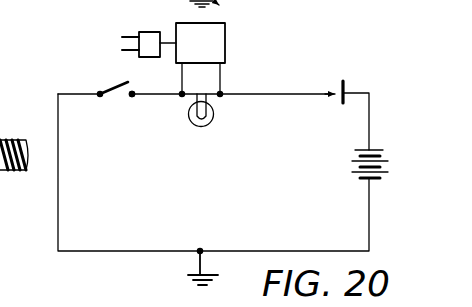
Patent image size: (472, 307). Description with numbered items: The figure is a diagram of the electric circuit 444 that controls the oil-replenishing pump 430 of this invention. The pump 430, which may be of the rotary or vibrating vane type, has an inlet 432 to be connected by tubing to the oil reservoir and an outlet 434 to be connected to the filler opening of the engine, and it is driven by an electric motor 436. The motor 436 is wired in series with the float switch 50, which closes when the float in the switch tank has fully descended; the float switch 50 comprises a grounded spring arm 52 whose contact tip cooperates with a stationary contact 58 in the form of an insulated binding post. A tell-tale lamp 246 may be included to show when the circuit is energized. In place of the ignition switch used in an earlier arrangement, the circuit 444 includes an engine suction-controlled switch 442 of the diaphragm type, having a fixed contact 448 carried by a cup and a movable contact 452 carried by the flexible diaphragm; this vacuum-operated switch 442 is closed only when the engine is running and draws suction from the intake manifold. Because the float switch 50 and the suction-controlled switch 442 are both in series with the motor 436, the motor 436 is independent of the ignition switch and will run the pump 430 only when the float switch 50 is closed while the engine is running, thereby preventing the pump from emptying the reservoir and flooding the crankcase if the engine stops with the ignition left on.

The float switch 50 is at (139, 89).
The spring arm 52 is at (122, 83).
The stationary contact 58 is at (131, 97).
The tell-tale lamp 246 is at (195, 125).
The pump 430 is at (148, 29).
The inlet 432 is at (124, 35).
The outlet 434 is at (122, 50).
The electric motor 436 is at (229, 41).
The engine suction-controlled switch 442 is at (336, 78).
The circuit 444 is at (54, 126).
The fixed contact 448 is at (332, 95).
The movable contact 452 is at (340, 101).